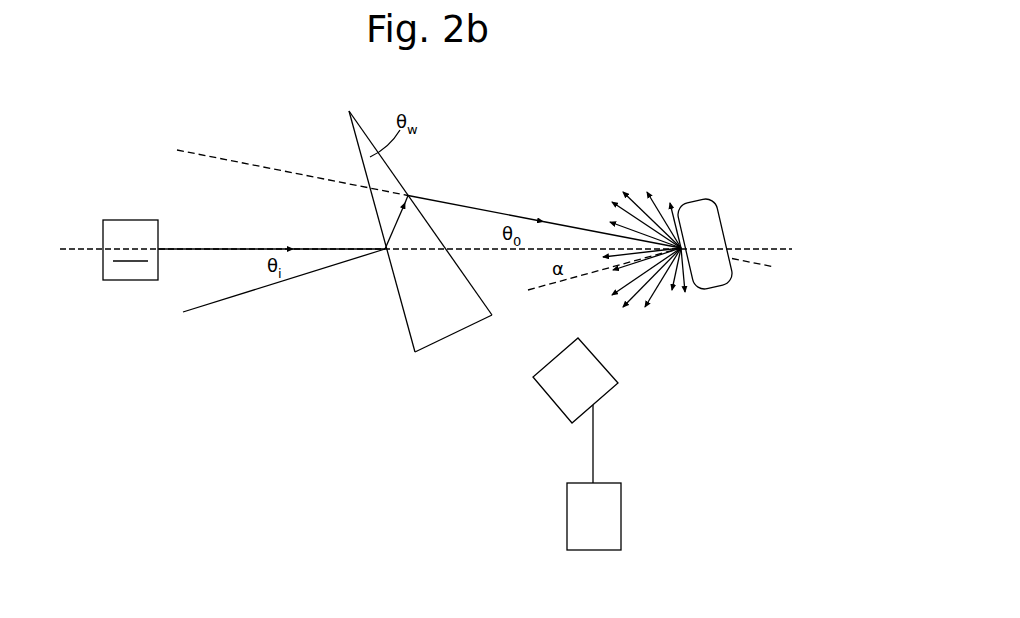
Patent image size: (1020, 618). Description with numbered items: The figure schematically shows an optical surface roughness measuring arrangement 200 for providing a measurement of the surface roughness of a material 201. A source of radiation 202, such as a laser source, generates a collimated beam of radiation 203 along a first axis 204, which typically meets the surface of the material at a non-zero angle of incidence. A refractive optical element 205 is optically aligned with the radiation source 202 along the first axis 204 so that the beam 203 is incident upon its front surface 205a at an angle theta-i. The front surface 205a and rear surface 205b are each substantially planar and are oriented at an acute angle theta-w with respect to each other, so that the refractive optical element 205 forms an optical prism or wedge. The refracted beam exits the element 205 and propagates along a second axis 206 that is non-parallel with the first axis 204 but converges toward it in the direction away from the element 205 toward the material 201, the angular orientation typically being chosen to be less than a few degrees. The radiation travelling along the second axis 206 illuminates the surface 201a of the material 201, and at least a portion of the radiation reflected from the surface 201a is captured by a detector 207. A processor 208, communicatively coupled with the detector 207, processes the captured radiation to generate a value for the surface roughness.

The optical surface roughness measuring arrangement 200 is at (574, 110).
The material 201 is at (720, 208).
The surface of the material 201a is at (672, 208).
The source of radiation 202 is at (130, 250).
The collimated beam of radiation 203 is at (205, 247).
The first axis 204 is at (80, 247).
The refractive optical element 205 is at (446, 255).
The front surface 205a is at (400, 315).
The rear surface 205b is at (487, 302).
The second axis 206 is at (237, 162).
The detector 207 is at (608, 372).
The processor 208 is at (622, 517).